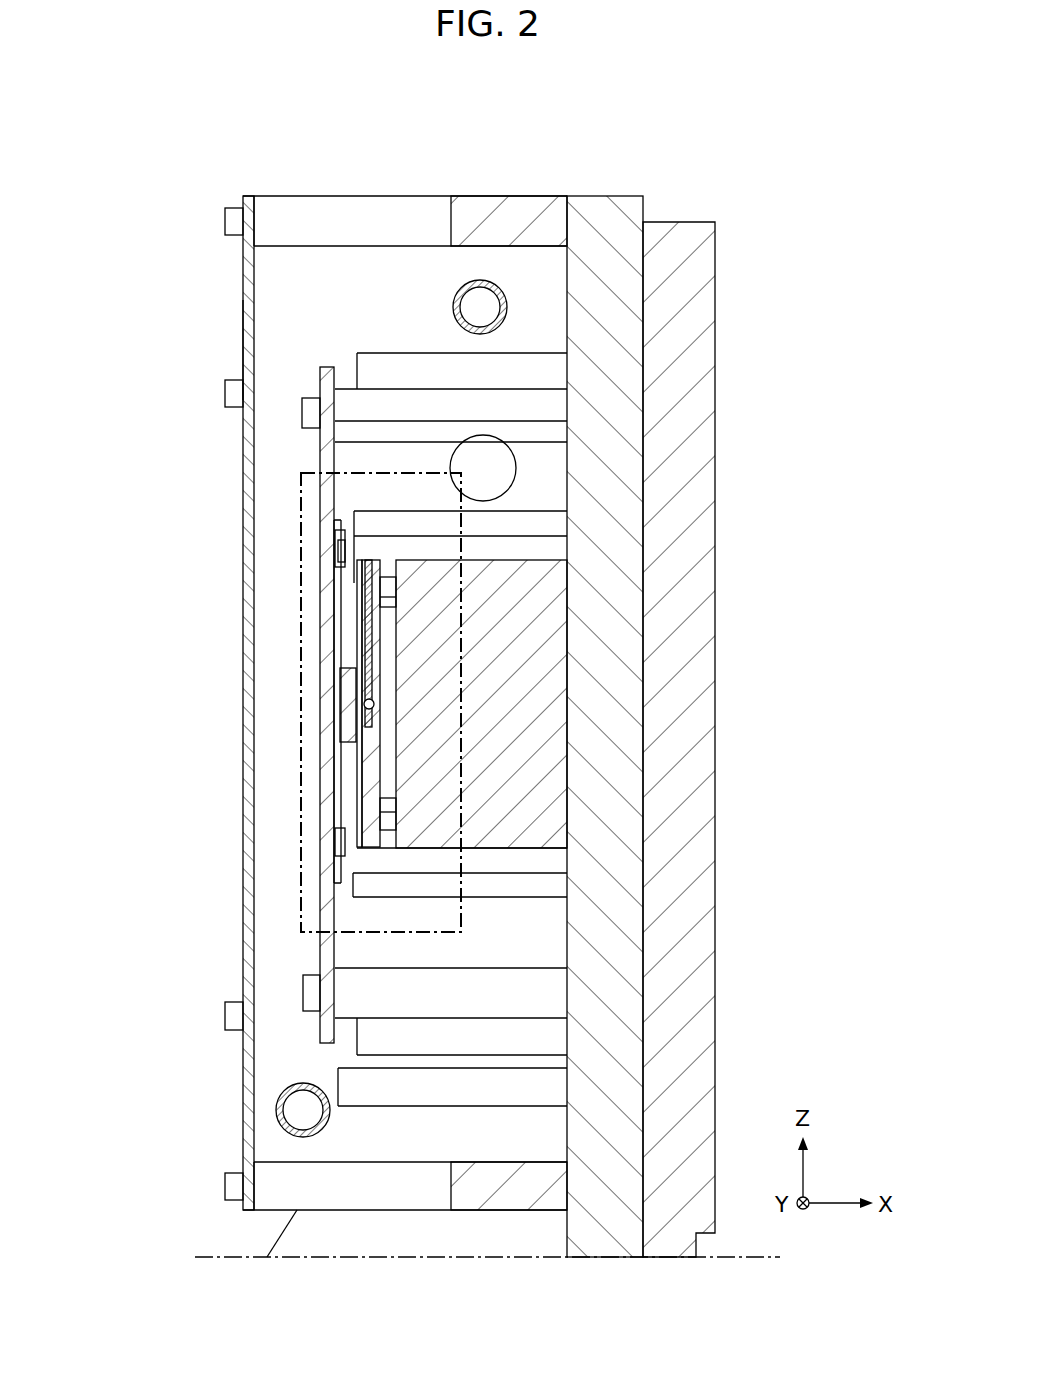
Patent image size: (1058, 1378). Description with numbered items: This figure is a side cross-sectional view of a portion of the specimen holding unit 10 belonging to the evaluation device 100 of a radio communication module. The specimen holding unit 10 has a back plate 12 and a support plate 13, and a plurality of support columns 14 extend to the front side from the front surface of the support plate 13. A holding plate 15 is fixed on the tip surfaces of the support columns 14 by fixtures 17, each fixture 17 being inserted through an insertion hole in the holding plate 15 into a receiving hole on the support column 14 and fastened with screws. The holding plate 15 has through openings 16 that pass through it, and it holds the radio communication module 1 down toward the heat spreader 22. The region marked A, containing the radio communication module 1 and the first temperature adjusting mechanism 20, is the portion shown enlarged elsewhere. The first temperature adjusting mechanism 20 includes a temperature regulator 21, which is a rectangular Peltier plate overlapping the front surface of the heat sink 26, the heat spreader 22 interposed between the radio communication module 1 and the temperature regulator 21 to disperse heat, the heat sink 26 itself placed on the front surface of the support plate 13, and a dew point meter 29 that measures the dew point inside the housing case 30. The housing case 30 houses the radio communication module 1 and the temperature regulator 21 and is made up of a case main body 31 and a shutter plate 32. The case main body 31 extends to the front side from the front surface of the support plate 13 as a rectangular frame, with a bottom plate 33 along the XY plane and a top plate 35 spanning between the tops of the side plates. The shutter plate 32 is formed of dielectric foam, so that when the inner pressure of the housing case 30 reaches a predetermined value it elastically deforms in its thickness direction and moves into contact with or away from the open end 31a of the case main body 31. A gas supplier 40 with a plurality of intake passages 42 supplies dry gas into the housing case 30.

The evaluation device 100 is at (689, 172).
The specimen holding unit 10 is at (733, 251).
The back plate 12 is at (668, 557).
The support plate 13 is at (603, 640).
The support column 14 is at (535, 410).
The holding plate 15 is at (325, 883).
The through opening 16 is at (333, 568).
The fixture 17 is at (302, 418).
The first temperature adjusting mechanism 20 is at (576, 675).
The temperature regulator 21 is at (388, 658).
The heat spreader 22 is at (363, 767).
The heat sink 26 is at (532, 706).
The dew point meter 29 is at (483, 490).
The housing case 30 is at (108, 272).
The case main body 31 is at (283, 233).
The shutter plate 32 is at (243, 320).
The open end 31a is at (243, 348).
The bottom plate 33 is at (423, 1188).
The top plate 35 is at (425, 215).
The gas supplier 40 is at (268, 1084).
The intake passage 42 is at (508, 306).
The radio communication module 1 is at (333, 793).
The region A is at (300, 524).